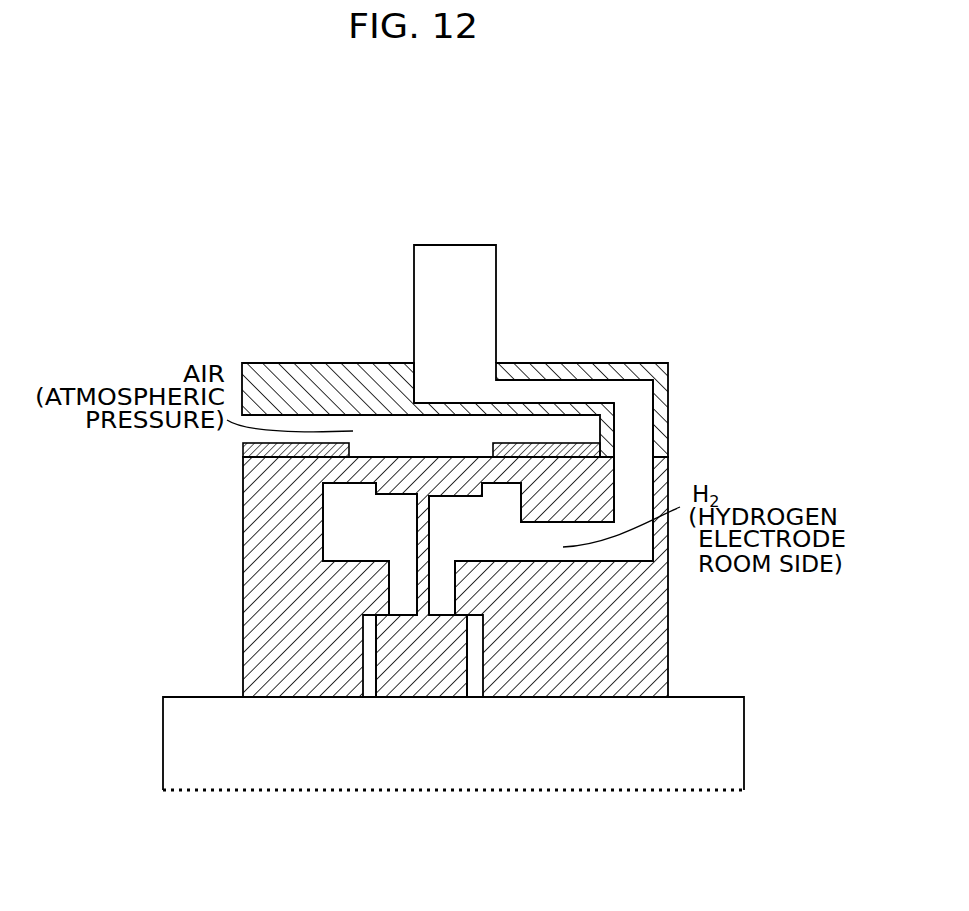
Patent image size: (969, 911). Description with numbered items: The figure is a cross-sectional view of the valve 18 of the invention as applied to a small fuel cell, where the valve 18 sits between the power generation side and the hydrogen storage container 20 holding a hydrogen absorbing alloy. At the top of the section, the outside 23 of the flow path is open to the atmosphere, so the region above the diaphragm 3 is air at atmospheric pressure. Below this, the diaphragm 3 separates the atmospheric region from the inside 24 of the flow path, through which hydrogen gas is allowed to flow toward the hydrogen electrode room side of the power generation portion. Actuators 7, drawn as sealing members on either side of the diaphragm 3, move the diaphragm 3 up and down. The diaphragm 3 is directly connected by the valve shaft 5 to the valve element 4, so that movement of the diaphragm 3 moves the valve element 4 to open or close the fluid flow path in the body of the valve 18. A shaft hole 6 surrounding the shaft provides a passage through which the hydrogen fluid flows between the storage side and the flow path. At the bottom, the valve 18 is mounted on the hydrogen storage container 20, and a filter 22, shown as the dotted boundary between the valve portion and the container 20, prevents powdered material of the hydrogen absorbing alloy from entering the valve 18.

The valve 18 is at (537, 200).
The outside of a flow path 23 is at (525, 315).
The diaphragm 3 is at (397, 470).
The actuators 7 is at (243, 449).
The inside of the flow path 24 is at (627, 445).
The valve shaft 5 is at (422, 585).
The shaft hole 6 is at (443, 597).
The valve element 4 is at (412, 662).
The hydrogen storage container 20 is at (373, 820).
The filter 22 is at (636, 792).